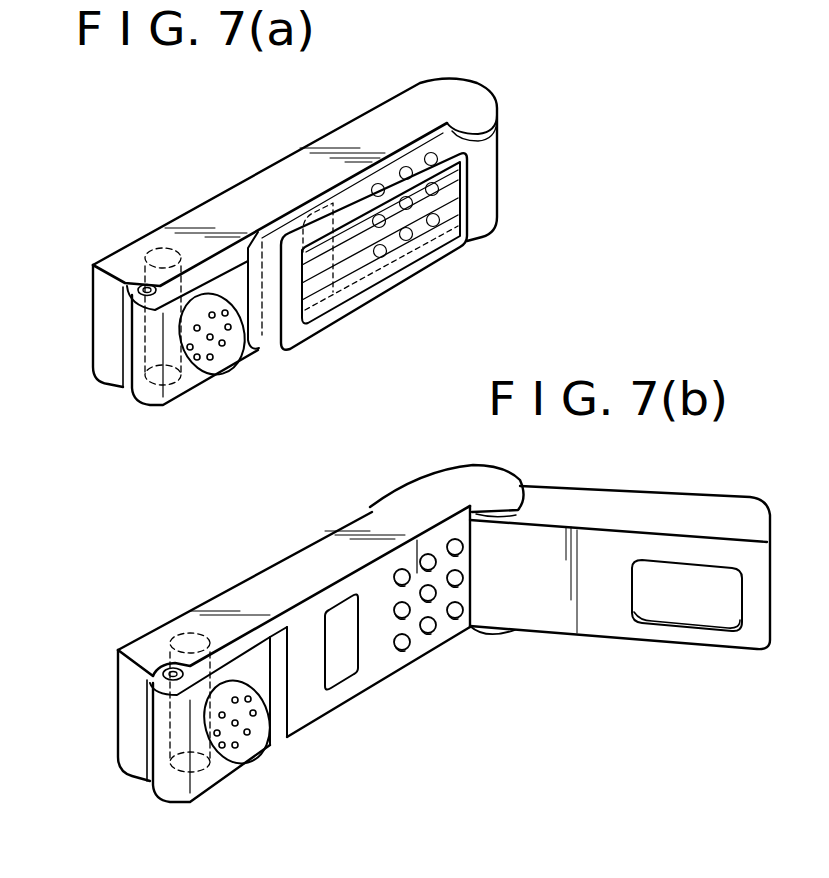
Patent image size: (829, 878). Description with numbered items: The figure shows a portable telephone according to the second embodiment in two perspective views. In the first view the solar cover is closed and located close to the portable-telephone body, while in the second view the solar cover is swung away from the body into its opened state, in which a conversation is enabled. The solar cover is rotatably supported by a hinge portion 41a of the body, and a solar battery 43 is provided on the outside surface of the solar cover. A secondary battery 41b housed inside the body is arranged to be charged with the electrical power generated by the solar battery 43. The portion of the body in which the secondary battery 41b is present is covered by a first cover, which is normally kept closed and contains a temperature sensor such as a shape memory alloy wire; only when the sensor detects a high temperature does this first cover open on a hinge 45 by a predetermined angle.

The hinge portion 41a is at (476, 110).
The secondary battery 41b is at (162, 255).
The solar battery 43 is at (457, 228).
The hinge 45 is at (138, 289).